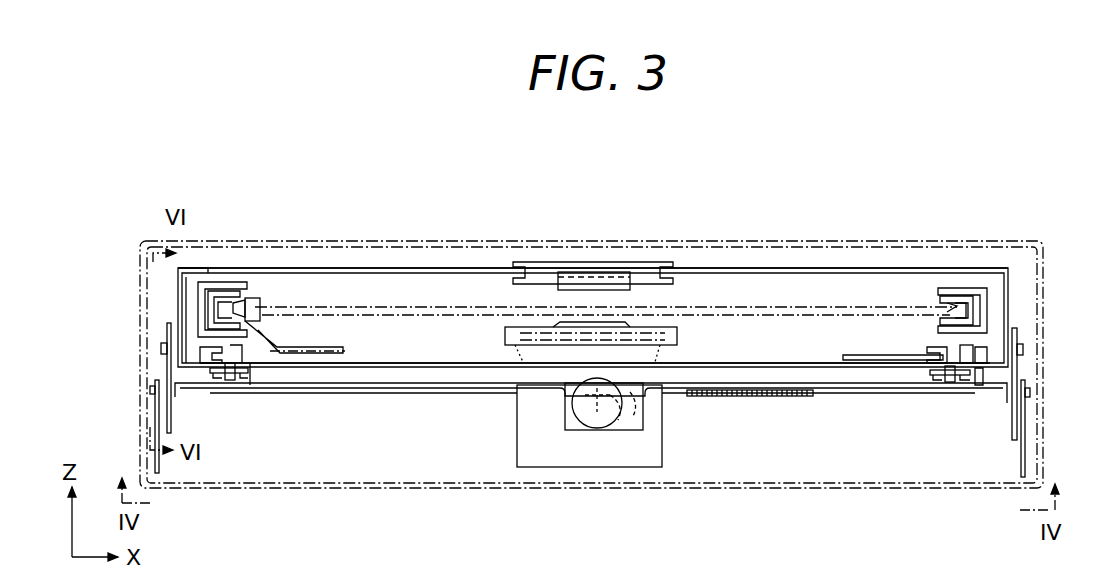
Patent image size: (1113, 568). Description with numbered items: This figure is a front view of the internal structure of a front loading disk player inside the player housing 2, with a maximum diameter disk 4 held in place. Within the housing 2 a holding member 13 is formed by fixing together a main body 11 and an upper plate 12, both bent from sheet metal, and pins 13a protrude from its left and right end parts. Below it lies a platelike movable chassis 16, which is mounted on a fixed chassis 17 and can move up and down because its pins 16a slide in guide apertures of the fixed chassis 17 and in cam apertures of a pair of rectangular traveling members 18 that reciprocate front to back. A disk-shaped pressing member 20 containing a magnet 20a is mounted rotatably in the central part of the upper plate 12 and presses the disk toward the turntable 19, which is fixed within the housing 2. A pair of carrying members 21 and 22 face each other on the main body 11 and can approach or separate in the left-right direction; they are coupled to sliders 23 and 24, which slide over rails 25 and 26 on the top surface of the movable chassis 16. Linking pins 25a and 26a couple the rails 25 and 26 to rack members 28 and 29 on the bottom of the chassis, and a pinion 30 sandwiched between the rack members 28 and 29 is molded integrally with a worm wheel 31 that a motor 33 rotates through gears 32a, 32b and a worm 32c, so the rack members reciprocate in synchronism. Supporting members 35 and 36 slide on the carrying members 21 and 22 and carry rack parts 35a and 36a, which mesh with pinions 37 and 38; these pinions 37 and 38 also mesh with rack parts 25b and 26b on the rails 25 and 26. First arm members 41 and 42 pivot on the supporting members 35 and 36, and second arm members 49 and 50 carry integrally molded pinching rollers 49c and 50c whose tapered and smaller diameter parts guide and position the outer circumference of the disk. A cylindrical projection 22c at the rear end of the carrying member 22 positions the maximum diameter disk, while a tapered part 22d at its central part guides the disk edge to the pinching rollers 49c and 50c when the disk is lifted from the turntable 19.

The player housing 2 is at (750, 241).
The disk 4 is at (433, 307).
The main body 11 is at (732, 368).
The upper plate 12 is at (826, 272).
The holding member 13 is at (792, 268).
The pins 13a is at (160, 348).
The movable chassis 16 is at (450, 395).
The pins 16a is at (152, 390).
The fixed chassis 17 is at (155, 408).
The traveling members 18 is at (165, 362).
The turntable 19 is at (676, 328).
The pressing member 20 is at (590, 275).
The magnet 20a is at (568, 262).
The carrying member 21 is at (963, 353).
The carrying member 22 is at (208, 345).
The cylindrical projection 22c is at (258, 316).
The tapered part 22d is at (268, 335).
The slider 23 is at (933, 372).
The slider 24 is at (255, 378).
The rail 25 is at (957, 383).
The linking pin 25a is at (960, 388).
The rack part 25b is at (942, 375).
The rail 26 is at (232, 380).
The linking pin 26a is at (227, 385).
The rack part 26b is at (245, 378).
The rack member 28 is at (830, 398).
The rack member 29 is at (413, 398).
The pinion 30 is at (550, 396).
The worm wheel 31 is at (565, 402).
The gear 32a is at (598, 423).
The gear 32b is at (633, 437).
The worm 32c is at (667, 432).
The motor 33 is at (583, 420).
The supporting member 35 is at (983, 312).
The rack part 35a is at (977, 347).
The supporting member 36 is at (177, 273).
The rack part 36a is at (198, 305).
The pinion 37 is at (947, 380).
The pinion 38 is at (240, 378).
The first arm member 41 is at (945, 300).
The first arm member 42 is at (247, 290).
The second arm member 49 is at (952, 307).
The pinching roller 49c is at (950, 307).
The second arm member 50 is at (240, 297).
The pinching roller 50c is at (245, 306).